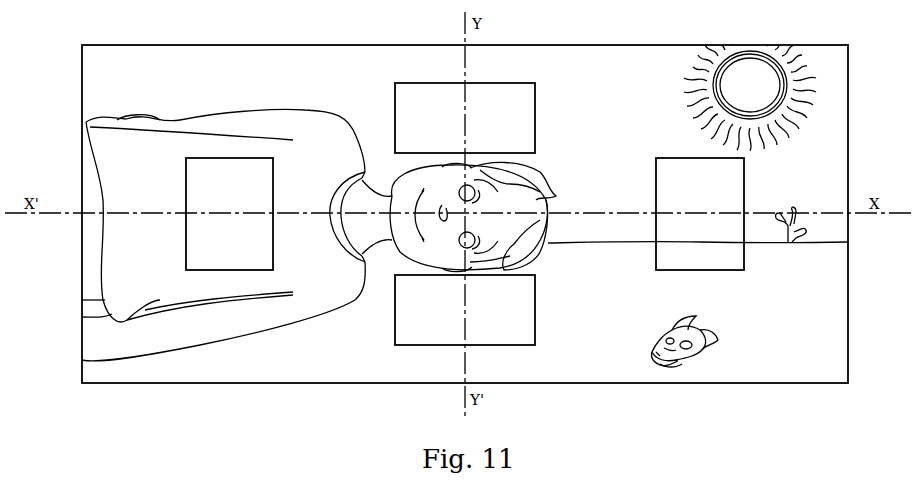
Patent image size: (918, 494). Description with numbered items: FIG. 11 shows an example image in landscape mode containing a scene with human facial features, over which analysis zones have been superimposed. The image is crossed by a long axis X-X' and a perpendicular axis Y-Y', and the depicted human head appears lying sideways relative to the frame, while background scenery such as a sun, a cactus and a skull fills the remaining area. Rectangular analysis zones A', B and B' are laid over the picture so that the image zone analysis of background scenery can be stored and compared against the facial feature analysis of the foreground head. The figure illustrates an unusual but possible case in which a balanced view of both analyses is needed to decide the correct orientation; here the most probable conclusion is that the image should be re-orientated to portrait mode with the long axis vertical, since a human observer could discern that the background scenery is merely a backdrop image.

The left sound localization region B' is at (229, 214).
The right sound localization region B is at (700, 214).
The front sound localization region A' is at (465, 310).
The listener's head is at (473, 216).